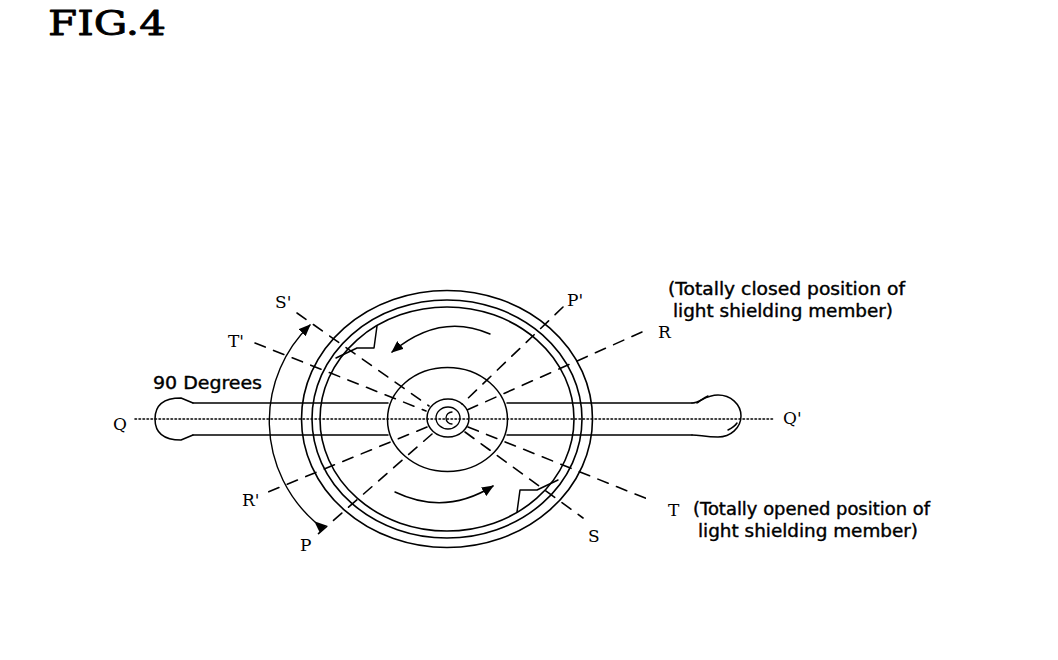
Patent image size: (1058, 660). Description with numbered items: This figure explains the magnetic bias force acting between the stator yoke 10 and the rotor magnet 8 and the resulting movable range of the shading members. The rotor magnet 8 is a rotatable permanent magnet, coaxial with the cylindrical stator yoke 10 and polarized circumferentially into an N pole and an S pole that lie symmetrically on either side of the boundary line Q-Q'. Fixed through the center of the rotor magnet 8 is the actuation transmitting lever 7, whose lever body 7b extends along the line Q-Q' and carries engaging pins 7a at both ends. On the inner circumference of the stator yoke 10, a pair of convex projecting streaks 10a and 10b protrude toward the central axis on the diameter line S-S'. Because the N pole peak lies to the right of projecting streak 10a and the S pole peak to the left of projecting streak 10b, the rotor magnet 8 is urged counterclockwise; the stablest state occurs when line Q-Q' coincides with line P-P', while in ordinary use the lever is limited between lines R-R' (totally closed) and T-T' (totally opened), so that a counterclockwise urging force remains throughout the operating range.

The actuation transmitting lever 7 is at (643, 401).
The engaging pins 7a is at (738, 432).
The lever body 7b is at (690, 398).
The rotor magnet 8 is at (465, 464).
The stator yoke 10 is at (378, 550).
The projecting streak 10a is at (374, 327).
The projecting streak 10b is at (519, 500).